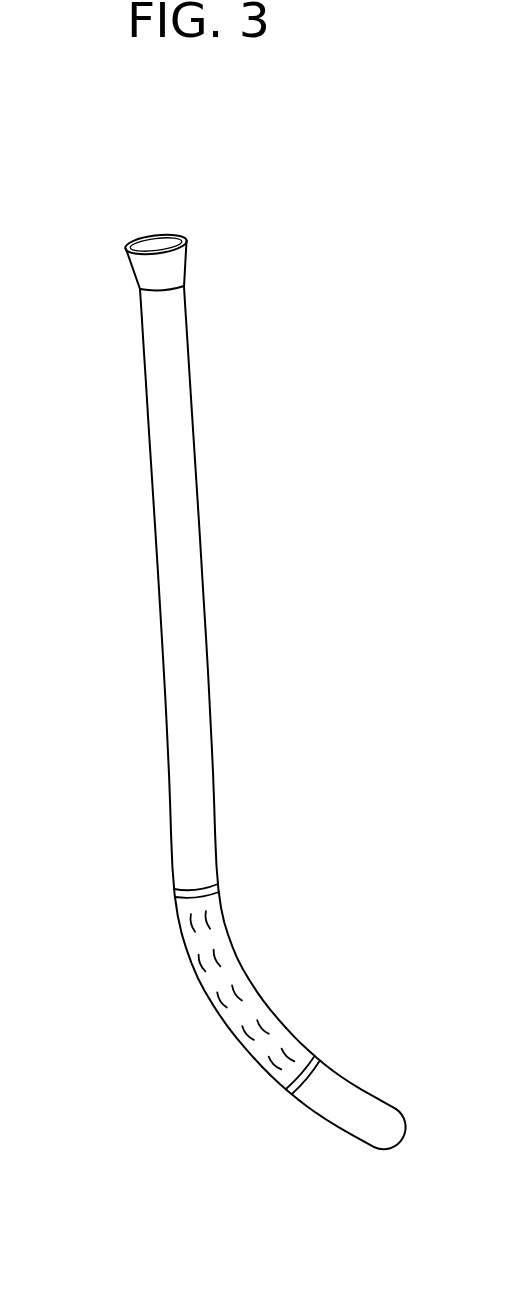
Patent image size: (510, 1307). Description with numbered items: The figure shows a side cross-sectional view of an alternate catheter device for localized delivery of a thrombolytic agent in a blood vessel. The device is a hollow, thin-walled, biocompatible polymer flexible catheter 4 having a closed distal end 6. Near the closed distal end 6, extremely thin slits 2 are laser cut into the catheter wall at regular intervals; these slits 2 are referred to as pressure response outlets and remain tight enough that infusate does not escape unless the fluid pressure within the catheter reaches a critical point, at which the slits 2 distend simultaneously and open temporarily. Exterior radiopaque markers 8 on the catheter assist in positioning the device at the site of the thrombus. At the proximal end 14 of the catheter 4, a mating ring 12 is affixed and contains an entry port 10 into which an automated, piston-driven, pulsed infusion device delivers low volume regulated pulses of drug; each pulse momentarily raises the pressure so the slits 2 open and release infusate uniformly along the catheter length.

The slits 2 is at (288, 1055).
The flexible catheter 4 is at (201, 493).
The closed distal end 6 is at (398, 1118).
The exterior radiopaque markers 8 is at (218, 889).
The entry port 10 is at (151, 246).
The mating ring 12 is at (184, 268).
The proximal end 14 is at (152, 245).